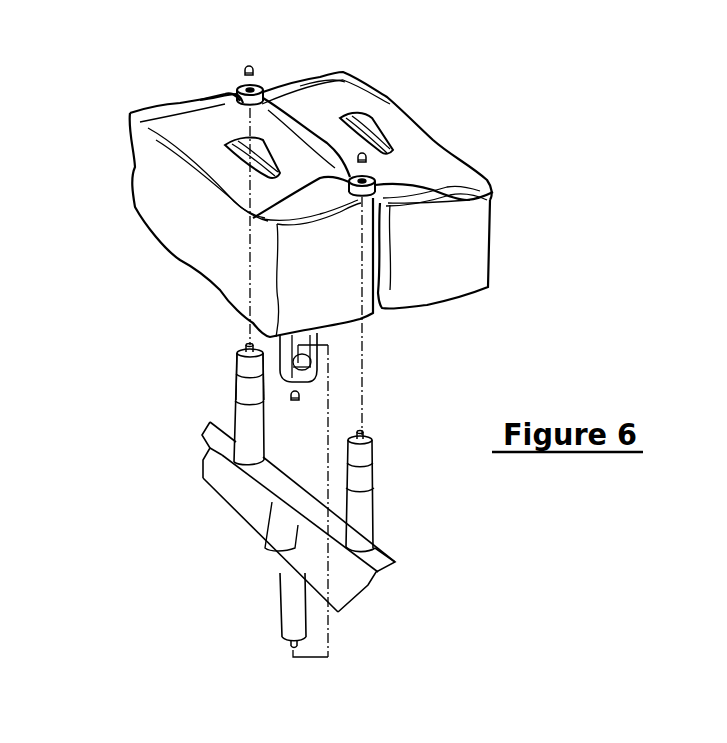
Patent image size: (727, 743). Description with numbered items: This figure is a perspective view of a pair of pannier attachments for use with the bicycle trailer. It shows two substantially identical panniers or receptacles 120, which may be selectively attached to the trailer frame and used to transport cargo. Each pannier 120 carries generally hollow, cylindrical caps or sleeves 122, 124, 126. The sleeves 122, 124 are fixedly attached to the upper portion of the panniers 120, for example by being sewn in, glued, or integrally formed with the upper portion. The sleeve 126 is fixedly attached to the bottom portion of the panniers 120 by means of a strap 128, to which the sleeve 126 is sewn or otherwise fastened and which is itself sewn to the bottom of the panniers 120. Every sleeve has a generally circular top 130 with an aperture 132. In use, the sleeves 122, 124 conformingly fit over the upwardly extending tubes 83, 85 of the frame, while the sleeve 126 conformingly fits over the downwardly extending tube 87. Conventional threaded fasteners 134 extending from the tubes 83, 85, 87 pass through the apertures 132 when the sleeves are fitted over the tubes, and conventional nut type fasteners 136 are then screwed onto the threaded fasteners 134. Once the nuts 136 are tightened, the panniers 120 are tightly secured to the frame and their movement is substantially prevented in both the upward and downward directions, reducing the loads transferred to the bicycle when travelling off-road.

The upwardly extending tube 83 is at (236, 389).
The upwardly extending tube 85 is at (378, 513).
The downwardly extending tube 87 is at (290, 594).
The pannier 120 is at (155, 185).
The sleeve 122 is at (247, 105).
The sleeve 124 is at (493, 194).
The sleeve 126 is at (327, 384).
The strap 128 is at (245, 392).
The circular top 130 is at (355, 98).
The aperture 132 is at (254, 88).
The threaded fastener 134 is at (246, 347).
The nut type fastener 136 is at (244, 73).